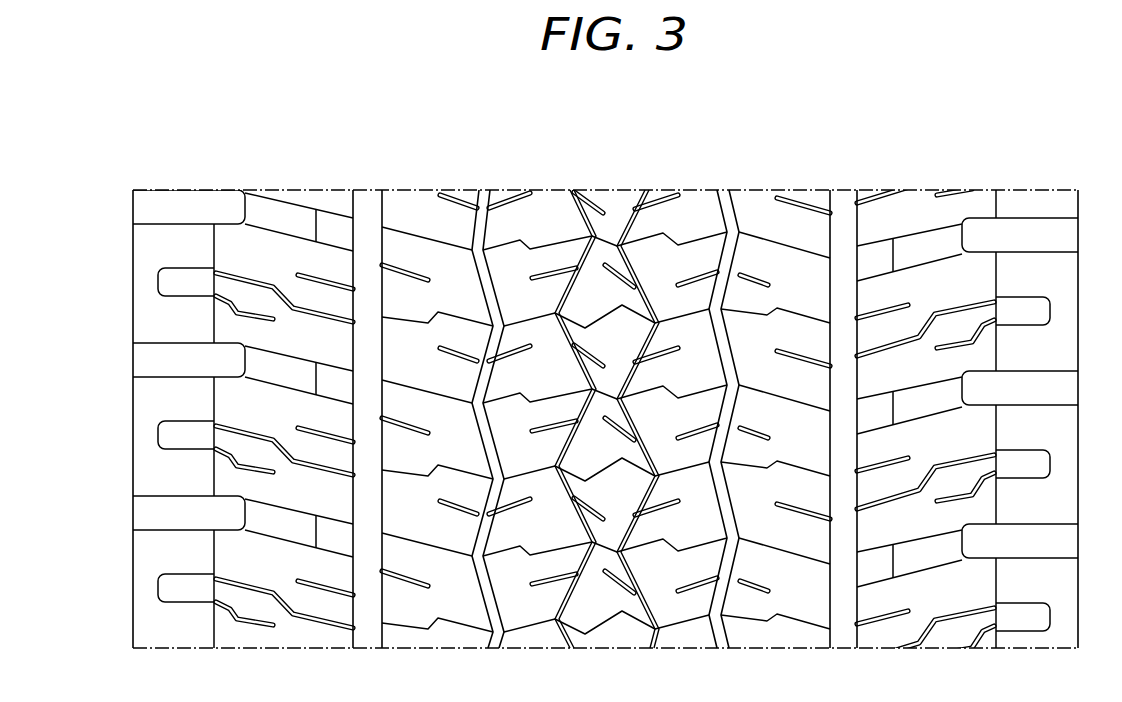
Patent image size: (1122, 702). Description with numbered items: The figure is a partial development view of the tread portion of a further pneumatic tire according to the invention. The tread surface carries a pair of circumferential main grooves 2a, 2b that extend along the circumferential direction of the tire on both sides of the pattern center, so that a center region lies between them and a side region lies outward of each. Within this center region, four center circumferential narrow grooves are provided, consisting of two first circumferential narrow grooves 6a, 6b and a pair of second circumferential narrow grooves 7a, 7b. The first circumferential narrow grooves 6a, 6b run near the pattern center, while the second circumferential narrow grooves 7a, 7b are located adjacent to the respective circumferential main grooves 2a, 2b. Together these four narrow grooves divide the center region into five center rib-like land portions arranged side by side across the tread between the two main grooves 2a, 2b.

The circumferential main groove 2a is at (365, 207).
The circumferential main groove 2b is at (842, 210).
The first circumferential narrow groove 6a is at (586, 248).
The first circumferential narrow groove 6b is at (628, 207).
The second circumferential narrow groove 7a is at (478, 200).
The second circumferential narrow groove 7b is at (735, 208).